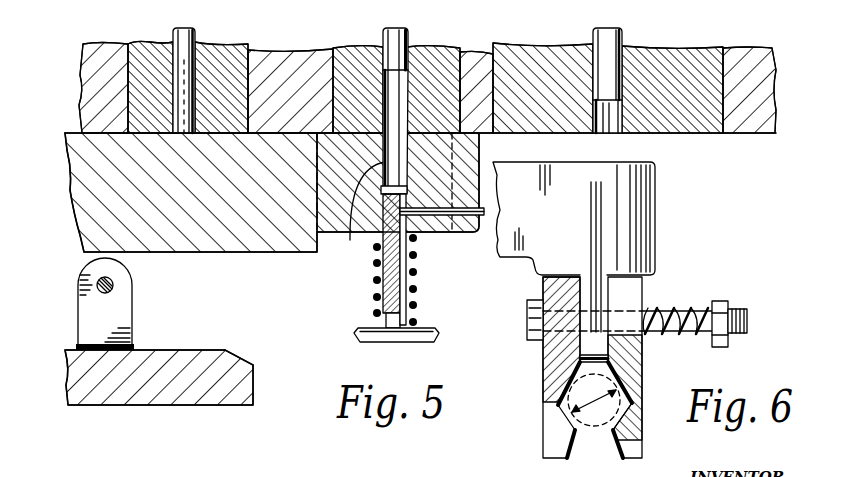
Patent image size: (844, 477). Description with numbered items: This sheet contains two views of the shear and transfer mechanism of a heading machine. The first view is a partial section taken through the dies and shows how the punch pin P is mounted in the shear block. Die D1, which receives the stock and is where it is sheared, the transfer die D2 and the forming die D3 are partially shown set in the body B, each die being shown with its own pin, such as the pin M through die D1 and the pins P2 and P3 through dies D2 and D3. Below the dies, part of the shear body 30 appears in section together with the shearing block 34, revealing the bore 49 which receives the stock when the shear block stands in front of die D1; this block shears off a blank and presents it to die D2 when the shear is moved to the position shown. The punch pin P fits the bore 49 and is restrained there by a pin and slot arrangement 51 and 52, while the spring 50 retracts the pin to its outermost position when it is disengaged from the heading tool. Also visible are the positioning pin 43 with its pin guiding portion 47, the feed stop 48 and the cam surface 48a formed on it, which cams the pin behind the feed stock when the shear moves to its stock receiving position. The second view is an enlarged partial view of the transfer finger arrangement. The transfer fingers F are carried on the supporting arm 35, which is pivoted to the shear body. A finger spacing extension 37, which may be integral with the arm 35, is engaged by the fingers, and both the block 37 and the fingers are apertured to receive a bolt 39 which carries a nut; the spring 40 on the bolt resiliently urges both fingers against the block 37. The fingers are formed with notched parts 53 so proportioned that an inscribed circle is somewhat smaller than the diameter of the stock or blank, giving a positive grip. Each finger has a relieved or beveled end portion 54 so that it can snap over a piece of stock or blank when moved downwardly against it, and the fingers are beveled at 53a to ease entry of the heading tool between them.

In FIG. 5, the body block B is at (102, 98).
In FIG. 5, the pin M is at (195, 42).
In FIG. 5, the die D1 is at (214, 46).
In FIG. 5, the transfer die D2 is at (440, 48).
In FIG. 5, the forming die D3 is at (666, 49).
In FIG. 5, the pin P2 is at (408, 34).
In FIG. 5, the pin P3 is at (621, 33).
In FIG. 5, the shear body 30 is at (222, 200).
In FIG. 5, the shearing block 34 is at (468, 164).
In FIG. 5, the bore 49 is at (358, 213).
In FIG. 5, the spring 50 is at (413, 305).
In FIG. 5, the pin of pin and slot arrangement 51 is at (405, 278).
In FIG. 5, the slot of pin and slot arrangement 52 is at (458, 218).
In FIG. 5, the punch pin P is at (397, 336).
In FIG. 5, the positioning pin 43 is at (113, 281).
In FIG. 5, the pin guiding portion 47 is at (125, 323).
In FIG. 5, the feed stop arm 48 is at (203, 350).
In FIG. 5, the cam surface 48a is at (247, 358).
In FIG. 6, the transfer finger supporting arm 35 is at (580, 220).
In FIG. 6, the finger spacing extension 37 is at (598, 298).
In FIG. 6, the bolt 39 is at (748, 321).
In FIG. 6, the spring 40 is at (668, 335).
In FIG. 6, the notched parts 53 is at (565, 390).
In FIG. 6, the beveled portions 53a is at (558, 410).
In FIG. 6, the relieved or beveled end portion 54 is at (567, 458).
In FIG. 6, the transfer fingers F is at (633, 443).